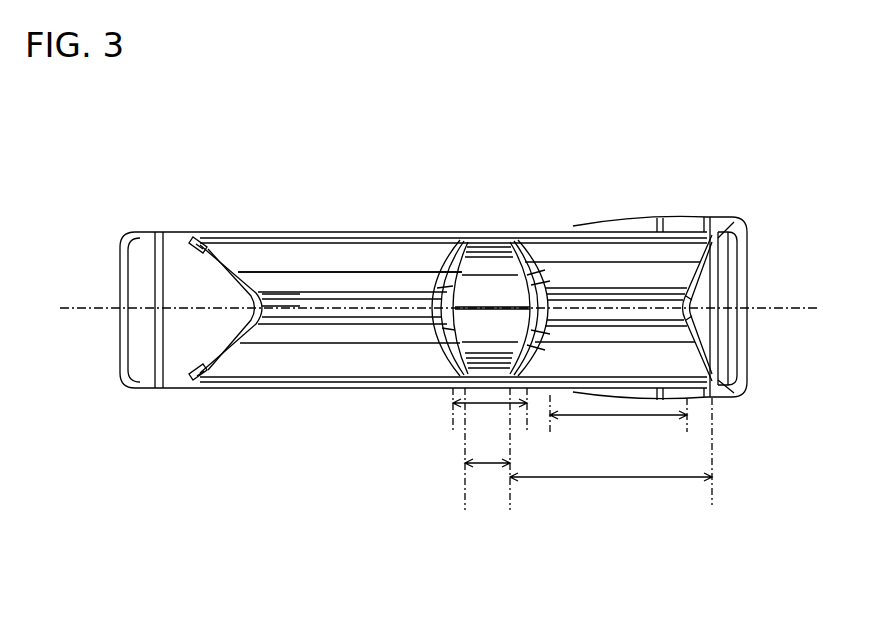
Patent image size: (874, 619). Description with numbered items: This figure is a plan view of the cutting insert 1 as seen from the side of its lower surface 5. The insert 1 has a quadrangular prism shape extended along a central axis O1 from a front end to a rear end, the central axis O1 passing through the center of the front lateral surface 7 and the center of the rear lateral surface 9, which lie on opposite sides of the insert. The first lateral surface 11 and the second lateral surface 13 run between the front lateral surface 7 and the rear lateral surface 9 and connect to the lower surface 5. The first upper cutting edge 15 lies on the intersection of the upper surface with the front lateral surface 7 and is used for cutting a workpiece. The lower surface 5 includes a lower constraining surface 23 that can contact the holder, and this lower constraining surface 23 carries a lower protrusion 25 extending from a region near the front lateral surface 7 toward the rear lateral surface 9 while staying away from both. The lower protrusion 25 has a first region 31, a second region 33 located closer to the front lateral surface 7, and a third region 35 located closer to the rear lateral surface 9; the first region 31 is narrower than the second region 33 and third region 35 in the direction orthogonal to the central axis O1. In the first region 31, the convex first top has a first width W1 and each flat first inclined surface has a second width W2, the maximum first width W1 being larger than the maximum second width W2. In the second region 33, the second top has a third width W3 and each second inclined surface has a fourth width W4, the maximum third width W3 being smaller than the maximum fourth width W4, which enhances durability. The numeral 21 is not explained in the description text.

The insert 1 is at (303, 118).
The lower surface 5 is at (187, 358).
The front lateral surface 7 is at (735, 272).
The rear lateral surface 9 is at (120, 348).
The first lateral surface 11 is at (285, 227).
The second lateral surface 13 is at (270, 388).
The first upper cutting edge 15 is at (747, 345).
The end protrusion 21 is at (710, 218).
The lower constraining surface 23 is at (263, 263).
The lower protrusion 25 is at (291, 306).
The first region 31 is at (478, 305).
The second region 33 is at (582, 303).
The third region 35 is at (400, 262).
The central axis O1 is at (442, 290).
The first width W1 is at (490, 405).
The second width W2 is at (488, 465).
The third width W3 is at (617, 415).
The fourth width W4 is at (638, 477).